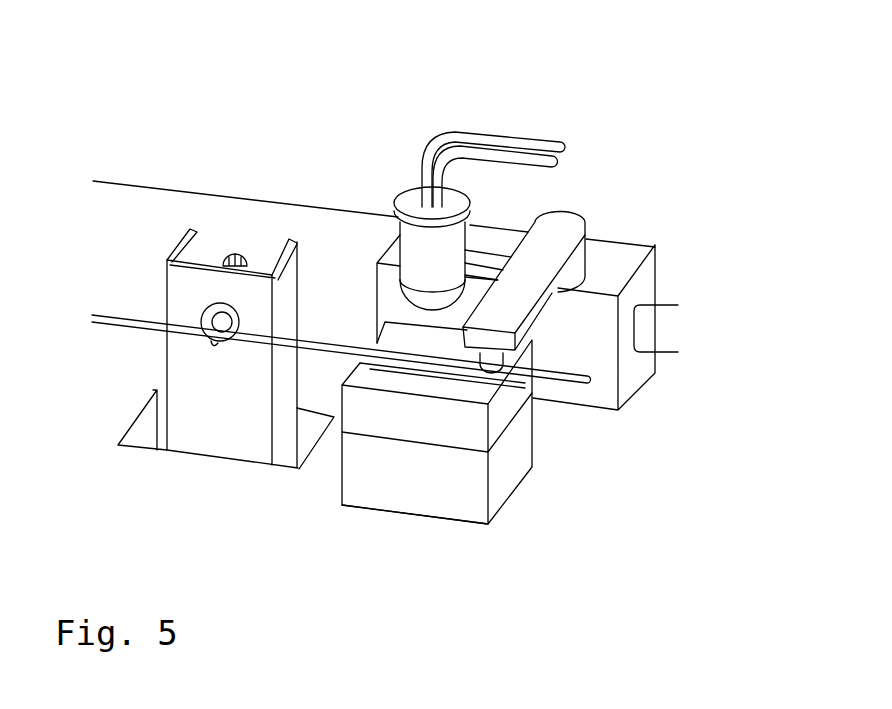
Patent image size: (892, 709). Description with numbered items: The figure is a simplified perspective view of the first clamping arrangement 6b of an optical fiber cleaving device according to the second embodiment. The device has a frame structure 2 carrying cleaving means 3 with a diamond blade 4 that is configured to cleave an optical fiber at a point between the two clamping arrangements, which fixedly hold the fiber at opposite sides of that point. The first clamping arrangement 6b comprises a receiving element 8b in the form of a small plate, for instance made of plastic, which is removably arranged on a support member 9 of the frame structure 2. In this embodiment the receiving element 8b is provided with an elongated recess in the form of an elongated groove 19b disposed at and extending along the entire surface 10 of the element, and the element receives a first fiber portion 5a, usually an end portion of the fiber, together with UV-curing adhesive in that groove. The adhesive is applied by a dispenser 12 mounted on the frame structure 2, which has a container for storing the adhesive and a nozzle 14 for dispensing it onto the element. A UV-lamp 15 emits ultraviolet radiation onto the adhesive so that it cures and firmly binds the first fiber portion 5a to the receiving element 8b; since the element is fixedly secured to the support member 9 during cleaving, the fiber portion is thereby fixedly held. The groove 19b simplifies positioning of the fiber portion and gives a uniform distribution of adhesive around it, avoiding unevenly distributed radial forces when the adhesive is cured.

The frame structure 2 is at (105, 180).
The cleaving means 3 is at (298, 293).
The diamond blade 4 is at (203, 307).
The first portion of the fiber 5a is at (505, 376).
The first clamping arrangement 6b is at (407, 549).
The receiving element 8b is at (362, 410).
The support member 9 is at (510, 458).
The surface of the element 10 is at (448, 388).
The dispenser 12 is at (575, 212).
The nozzle 14 is at (512, 383).
The UV-lamp 15 is at (483, 133).
The elongated groove 19b is at (415, 370).